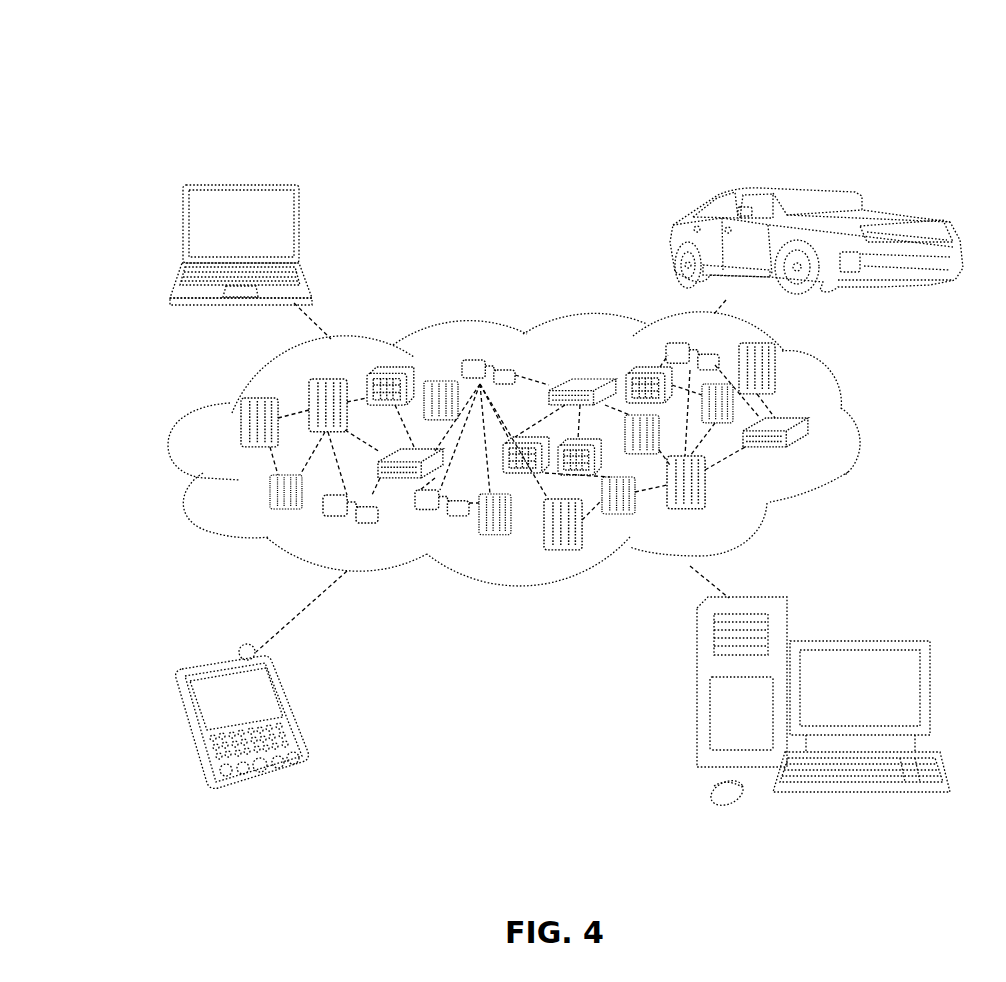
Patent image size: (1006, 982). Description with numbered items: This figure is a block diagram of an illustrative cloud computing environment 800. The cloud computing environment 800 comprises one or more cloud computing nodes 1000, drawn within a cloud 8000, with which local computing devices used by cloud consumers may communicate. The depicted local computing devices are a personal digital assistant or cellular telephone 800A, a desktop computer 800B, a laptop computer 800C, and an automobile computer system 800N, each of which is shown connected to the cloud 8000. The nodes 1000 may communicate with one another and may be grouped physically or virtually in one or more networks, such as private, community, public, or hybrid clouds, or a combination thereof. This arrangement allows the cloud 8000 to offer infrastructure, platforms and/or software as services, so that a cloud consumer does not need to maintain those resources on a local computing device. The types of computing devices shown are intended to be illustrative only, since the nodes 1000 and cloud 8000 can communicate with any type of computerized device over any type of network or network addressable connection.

The cloud computing environment 800 is at (115, 95).
The personal digital assistant (PDA) or cellular telephone 800A is at (295, 709).
The desktop computer 800B is at (860, 638).
The laptop computer 800C is at (305, 231).
The automobile computer system 800N is at (672, 250).
The cloud 8000 is at (838, 429).
The cloud computing nodes 1000 is at (810, 452).